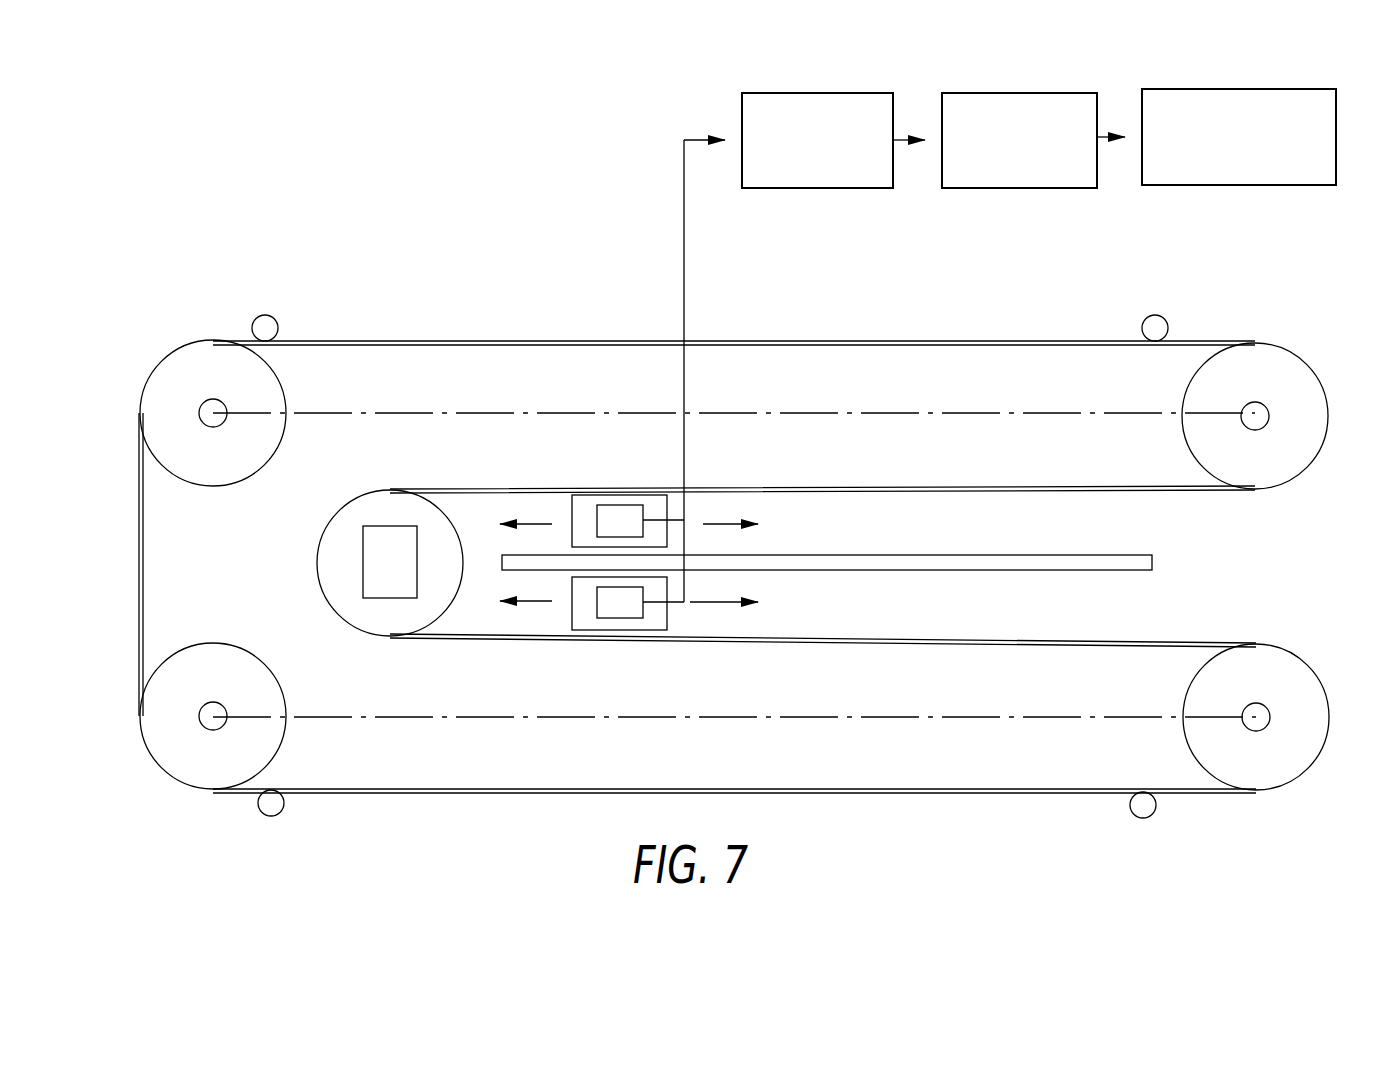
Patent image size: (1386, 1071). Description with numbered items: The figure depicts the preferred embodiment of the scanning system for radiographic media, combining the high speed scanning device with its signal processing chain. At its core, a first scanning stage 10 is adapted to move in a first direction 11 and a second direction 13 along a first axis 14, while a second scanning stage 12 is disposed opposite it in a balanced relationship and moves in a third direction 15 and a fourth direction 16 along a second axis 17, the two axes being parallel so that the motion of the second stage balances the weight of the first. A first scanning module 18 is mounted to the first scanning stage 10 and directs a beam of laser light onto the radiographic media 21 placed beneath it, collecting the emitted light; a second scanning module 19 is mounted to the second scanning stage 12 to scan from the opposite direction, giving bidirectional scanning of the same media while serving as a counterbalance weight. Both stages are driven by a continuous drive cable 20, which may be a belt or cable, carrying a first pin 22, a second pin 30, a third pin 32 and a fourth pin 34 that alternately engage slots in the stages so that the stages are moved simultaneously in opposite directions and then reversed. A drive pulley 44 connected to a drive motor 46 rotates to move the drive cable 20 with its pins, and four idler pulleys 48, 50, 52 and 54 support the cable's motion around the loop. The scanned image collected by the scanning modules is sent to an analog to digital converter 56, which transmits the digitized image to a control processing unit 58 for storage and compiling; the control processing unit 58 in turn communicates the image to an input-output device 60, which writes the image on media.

The first scanning stage 10 is at (572, 510).
The first direction 11 is at (727, 522).
The second scanning stage 12 is at (572, 612).
The second direction 13 is at (508, 522).
The first axis 14 is at (890, 412).
The third direction 15 is at (735, 603).
The fourth direction 16 is at (522, 600).
The second axis 17 is at (856, 720).
The first scanning module 18 is at (620, 505).
The second scanning module 19 is at (613, 618).
The continuous drive cable 20 is at (400, 341).
The radiographic media 21 is at (1000, 572).
The first pin 22 is at (1147, 319).
The second pin 30 is at (275, 318).
The third pin 32 is at (272, 816).
The fourth pin 34 is at (1131, 813).
The drive pulley 44 is at (343, 518).
The drive motor 46 is at (362, 568).
The idler pulley 48 is at (1305, 378).
The idler pulley 50 is at (158, 375).
The idler pulley 52 is at (162, 748).
The idler pulley 54 is at (1307, 748).
The analog to digital converter 56 is at (840, 93).
The control processing unit 58 is at (1020, 93).
The input-output device 60 is at (1222, 89).